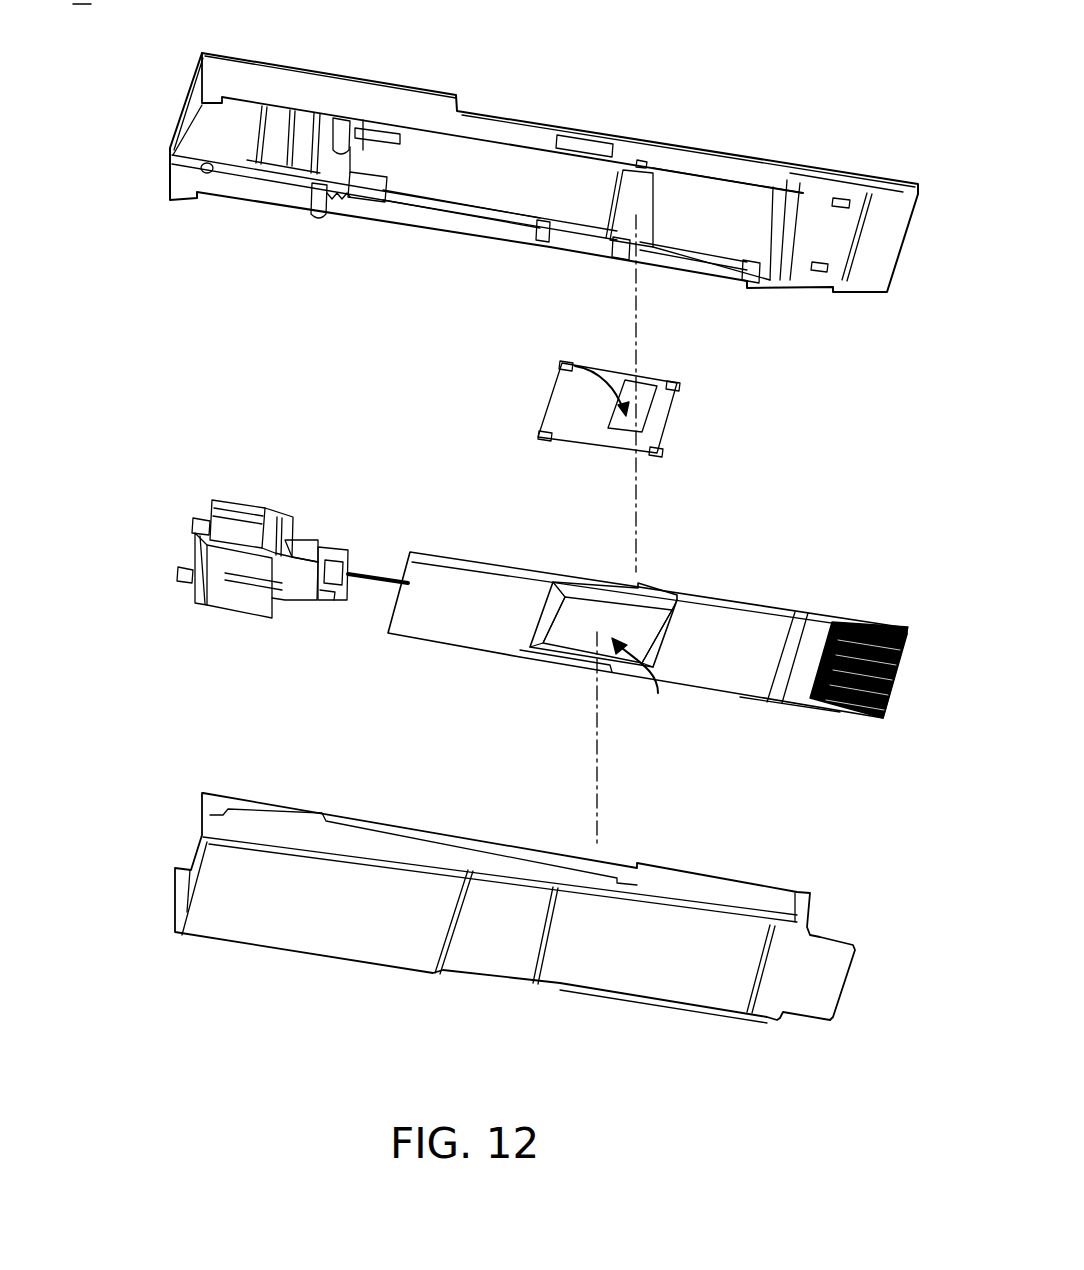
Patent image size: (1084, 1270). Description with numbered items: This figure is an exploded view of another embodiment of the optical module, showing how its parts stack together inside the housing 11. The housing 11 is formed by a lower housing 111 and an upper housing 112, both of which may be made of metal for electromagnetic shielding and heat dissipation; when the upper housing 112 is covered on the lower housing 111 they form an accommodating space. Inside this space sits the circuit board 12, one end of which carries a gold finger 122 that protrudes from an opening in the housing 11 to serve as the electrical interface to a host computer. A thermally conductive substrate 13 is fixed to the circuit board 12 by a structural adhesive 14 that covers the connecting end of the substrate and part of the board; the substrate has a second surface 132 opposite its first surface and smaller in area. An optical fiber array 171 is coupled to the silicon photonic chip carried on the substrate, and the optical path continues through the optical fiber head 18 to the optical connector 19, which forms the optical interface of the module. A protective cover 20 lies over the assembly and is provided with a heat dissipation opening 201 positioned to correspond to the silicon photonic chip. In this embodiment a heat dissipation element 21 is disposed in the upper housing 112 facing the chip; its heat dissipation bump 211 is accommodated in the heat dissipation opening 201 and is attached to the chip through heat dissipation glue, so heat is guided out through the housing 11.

The housing 11 is at (176, 274).
The lower housing 111 is at (300, 833).
The upper housing 112 is at (232, 155).
The circuit board 12 is at (488, 587).
The gold finger 122 is at (833, 707).
The thermally conductive substrate 13 is at (597, 607).
The second surface 132 is at (645, 685).
The structural adhesive 14 is at (663, 628).
The optical fiber array 171 is at (380, 570).
The optical fiber head 18 is at (348, 550).
The optical connector 19 is at (262, 508).
The protective cover 20 is at (652, 427).
The heat dissipation opening 201 is at (573, 365).
The heat dissipation element 21 is at (710, 203).
The heat dissipation bump 211 is at (632, 207).